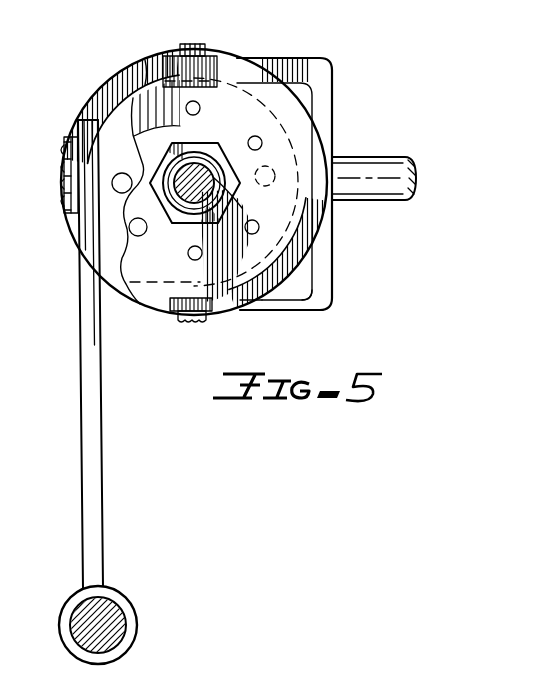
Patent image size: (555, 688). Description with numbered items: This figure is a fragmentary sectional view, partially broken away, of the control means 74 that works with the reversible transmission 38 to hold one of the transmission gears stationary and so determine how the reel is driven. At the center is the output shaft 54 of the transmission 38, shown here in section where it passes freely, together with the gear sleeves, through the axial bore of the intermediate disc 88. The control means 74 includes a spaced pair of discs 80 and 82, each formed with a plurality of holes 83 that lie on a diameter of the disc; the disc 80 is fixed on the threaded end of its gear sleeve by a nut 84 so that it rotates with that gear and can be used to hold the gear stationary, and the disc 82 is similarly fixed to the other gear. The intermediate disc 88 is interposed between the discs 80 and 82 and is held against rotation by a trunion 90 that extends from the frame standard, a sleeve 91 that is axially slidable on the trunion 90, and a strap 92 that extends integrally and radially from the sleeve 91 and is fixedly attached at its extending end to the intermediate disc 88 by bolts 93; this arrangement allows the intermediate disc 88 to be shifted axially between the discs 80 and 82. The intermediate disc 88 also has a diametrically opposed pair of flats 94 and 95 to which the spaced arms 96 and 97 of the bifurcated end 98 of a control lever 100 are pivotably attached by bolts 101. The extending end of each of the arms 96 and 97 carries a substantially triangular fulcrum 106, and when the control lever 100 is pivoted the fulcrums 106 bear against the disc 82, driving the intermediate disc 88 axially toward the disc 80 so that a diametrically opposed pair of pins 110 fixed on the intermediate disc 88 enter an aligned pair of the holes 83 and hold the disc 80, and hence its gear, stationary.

The reversible transmission 38 is at (6, 78).
The output shaft 54 is at (232, 206).
The control means 74 is at (320, 45).
The disc 80 is at (290, 306).
The disc 82 is at (113, 78).
The holes 83 is at (252, 136).
The nut 84 is at (182, 237).
The intermediate disc 88 is at (98, 100).
The trunion 90 is at (115, 630).
The sleeve 91 is at (125, 592).
The strap 92 is at (102, 470).
The bolts 93 is at (60, 202).
The flat 94 is at (150, 72).
The flat 95 is at (151, 300).
The arm 96 is at (292, 57).
The arm 97 is at (312, 309).
The bifurcated end 98 is at (336, 272).
The control lever 100 is at (380, 153).
The bolts 101 is at (192, 44).
The fulcrum 106 is at (210, 63).
The pins 110 is at (80, 236).